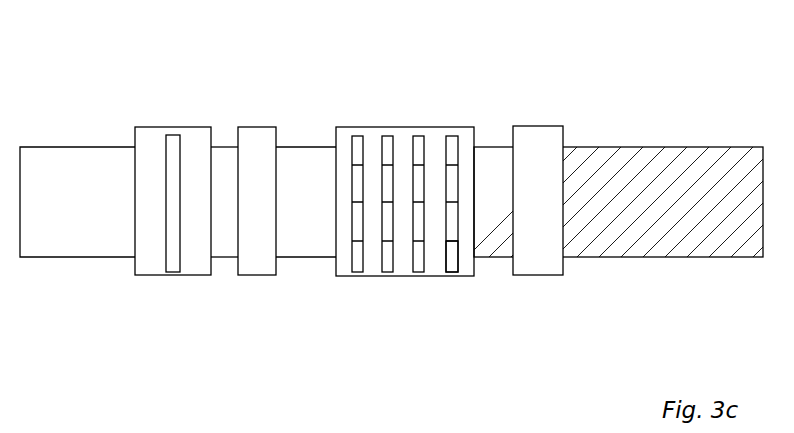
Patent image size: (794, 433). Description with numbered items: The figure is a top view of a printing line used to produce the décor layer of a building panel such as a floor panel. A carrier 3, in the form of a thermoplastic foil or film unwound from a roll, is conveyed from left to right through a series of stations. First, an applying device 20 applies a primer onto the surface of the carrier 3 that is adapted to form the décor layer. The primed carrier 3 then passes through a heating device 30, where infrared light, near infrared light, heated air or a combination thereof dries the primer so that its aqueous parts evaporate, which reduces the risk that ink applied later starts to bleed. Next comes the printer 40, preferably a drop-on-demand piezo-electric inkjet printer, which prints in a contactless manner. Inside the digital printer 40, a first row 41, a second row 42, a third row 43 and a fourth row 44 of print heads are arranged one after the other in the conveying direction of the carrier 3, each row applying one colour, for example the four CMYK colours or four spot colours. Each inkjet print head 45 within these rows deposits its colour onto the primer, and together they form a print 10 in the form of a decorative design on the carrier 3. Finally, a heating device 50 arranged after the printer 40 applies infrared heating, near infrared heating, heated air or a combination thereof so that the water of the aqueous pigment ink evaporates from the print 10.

The carrier 3 is at (90, 220).
The print 10 is at (652, 190).
The applying device 20 is at (170, 135).
The heating device 30 is at (253, 155).
The printer 40 is at (413, 217).
The first row of print heads 41 is at (357, 120).
The second row of print heads 42 is at (388, 120).
The third row of print heads 43 is at (418, 120).
The fourth row of print heads 44 is at (455, 120).
The inkjet print head 45 is at (455, 258).
The heating device 50 is at (535, 139).